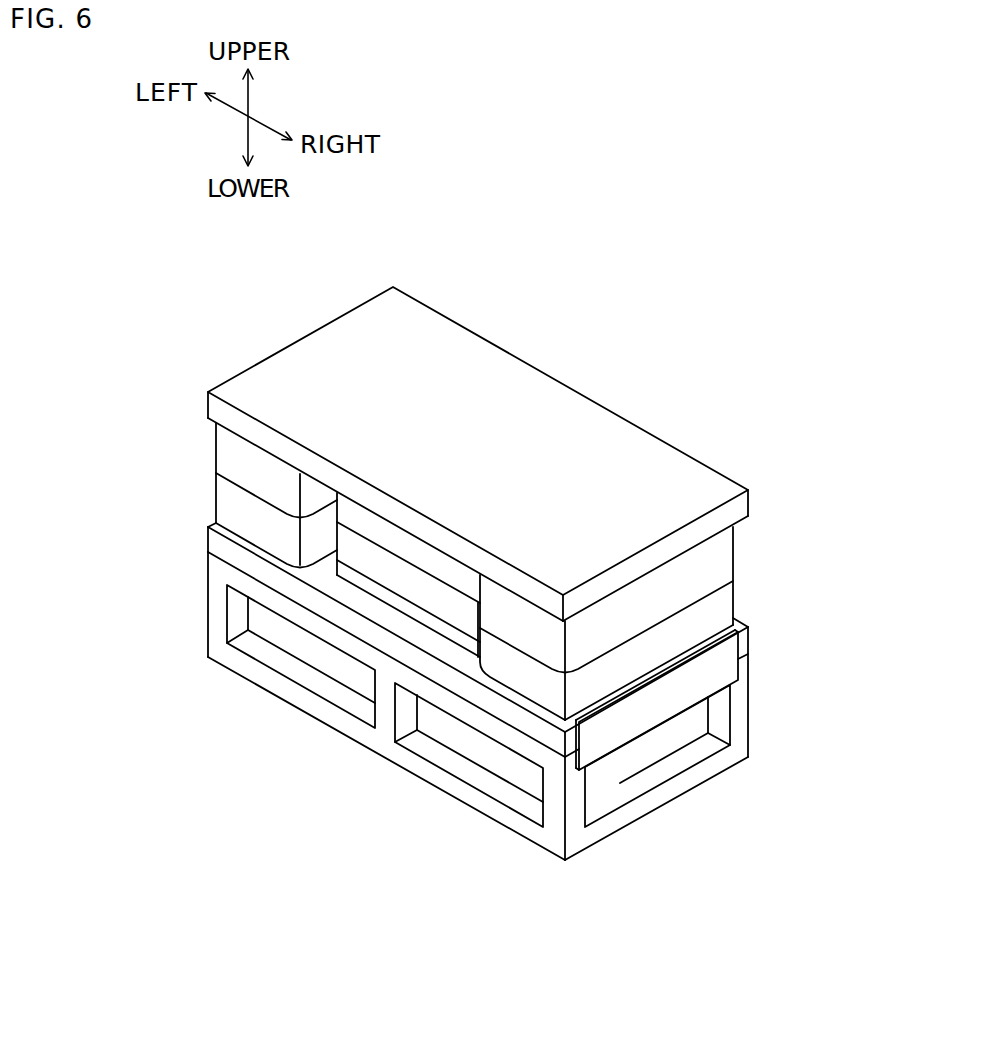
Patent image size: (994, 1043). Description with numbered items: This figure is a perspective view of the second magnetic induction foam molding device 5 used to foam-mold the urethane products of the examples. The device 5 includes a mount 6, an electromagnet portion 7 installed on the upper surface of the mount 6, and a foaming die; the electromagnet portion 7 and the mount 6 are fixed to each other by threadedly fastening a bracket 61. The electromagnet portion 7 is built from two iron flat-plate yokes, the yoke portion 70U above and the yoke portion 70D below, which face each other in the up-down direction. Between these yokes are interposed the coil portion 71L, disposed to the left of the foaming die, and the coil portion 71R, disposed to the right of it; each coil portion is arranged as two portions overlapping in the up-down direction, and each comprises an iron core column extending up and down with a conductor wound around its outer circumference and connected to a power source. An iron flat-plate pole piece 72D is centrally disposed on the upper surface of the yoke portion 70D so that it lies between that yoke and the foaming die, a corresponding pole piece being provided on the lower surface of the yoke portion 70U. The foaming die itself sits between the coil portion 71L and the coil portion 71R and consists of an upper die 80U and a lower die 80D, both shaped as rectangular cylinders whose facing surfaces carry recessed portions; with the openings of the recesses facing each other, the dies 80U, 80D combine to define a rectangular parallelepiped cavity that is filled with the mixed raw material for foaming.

The second magnetic induction foam molding device 5 is at (651, 344).
The electromagnet portion 7 is at (230, 350).
The yoke portion 70U is at (645, 470).
The yoke portion 70D is at (217, 541).
The coil portion 71L is at (230, 453).
The coil portion 71R is at (718, 563).
The pole piece 72D is at (356, 577).
The upper die 80U is at (445, 563).
The lower die 80D is at (403, 586).
The mount 6 is at (585, 832).
The bracket 61 is at (732, 663).